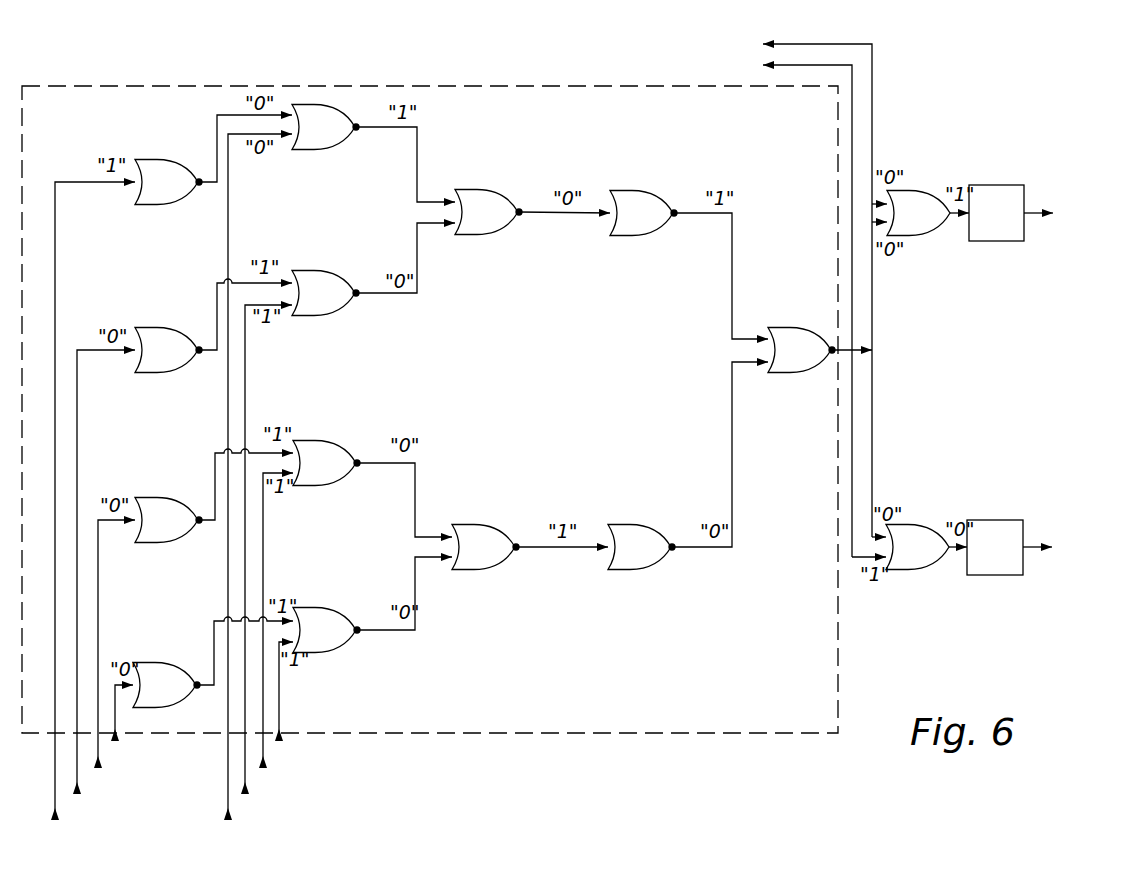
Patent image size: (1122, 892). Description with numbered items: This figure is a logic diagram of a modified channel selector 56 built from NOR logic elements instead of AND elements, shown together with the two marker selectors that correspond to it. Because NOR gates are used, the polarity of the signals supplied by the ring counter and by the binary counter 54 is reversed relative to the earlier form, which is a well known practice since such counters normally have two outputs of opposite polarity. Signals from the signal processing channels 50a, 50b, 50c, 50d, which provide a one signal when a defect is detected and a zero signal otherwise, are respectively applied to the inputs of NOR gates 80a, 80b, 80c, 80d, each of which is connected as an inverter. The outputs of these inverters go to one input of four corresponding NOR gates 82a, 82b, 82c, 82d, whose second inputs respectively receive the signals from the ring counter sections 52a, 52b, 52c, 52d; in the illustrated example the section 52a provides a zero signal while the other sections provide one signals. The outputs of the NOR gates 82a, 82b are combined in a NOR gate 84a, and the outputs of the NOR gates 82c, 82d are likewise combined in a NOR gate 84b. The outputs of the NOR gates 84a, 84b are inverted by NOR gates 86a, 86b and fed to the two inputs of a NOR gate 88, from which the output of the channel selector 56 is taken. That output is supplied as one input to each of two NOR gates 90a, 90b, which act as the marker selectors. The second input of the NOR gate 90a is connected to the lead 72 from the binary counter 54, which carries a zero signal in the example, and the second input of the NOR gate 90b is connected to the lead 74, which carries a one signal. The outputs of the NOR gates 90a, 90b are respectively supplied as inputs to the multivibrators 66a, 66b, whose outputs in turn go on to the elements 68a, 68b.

The channel selector 56 is at (447, 32).
The signal processing channel 50a is at (107, 510).
The signal processing channel 50b is at (129, 582).
The signal processing channel 50c is at (147, 653).
The signal processing channel 50d is at (165, 723).
The ring counter section 52a is at (282, 486).
The ring counter section 52b is at (298, 559).
The ring counter section 52c is at (315, 629).
The ring counter section 52d is at (332, 701).
The binary counter 54 is at (690, 53).
The NOR gate 80a is at (153, 160).
The NOR gate 80b is at (183, 326).
The NOR gate 80c is at (186, 497).
The NOR gate 80d is at (180, 663).
The NOR gate 82a is at (323, 149).
The NOR gate 82b is at (323, 315).
The NOR gate 82c is at (333, 485).
The NOR gate 82d is at (343, 653).
The NOR gate 84a is at (490, 190).
The NOR gate 84b is at (480, 525).
The NOR gate 86a is at (648, 191).
The NOR gate 86b is at (645, 525).
The NOR gate 88 is at (802, 328).
The lead 72 is at (873, 88).
The lead 74 is at (852, 128).
The NOR gate 90a is at (915, 191).
The NOR gate 90b is at (912, 525).
The multivibrator 66a is at (1000, 185).
The multivibrator 66b is at (998, 520).
The output to 68a is at (1076, 215).
The output to 68b is at (1076, 549).